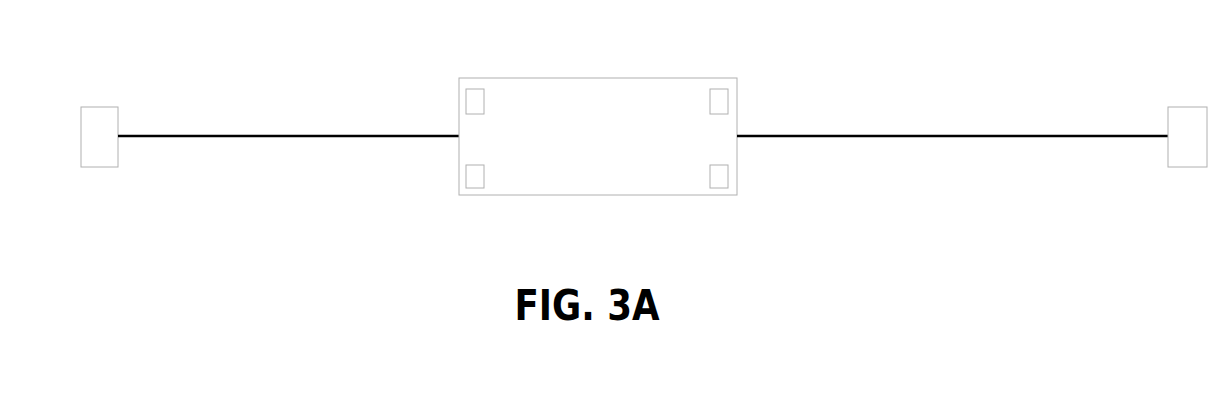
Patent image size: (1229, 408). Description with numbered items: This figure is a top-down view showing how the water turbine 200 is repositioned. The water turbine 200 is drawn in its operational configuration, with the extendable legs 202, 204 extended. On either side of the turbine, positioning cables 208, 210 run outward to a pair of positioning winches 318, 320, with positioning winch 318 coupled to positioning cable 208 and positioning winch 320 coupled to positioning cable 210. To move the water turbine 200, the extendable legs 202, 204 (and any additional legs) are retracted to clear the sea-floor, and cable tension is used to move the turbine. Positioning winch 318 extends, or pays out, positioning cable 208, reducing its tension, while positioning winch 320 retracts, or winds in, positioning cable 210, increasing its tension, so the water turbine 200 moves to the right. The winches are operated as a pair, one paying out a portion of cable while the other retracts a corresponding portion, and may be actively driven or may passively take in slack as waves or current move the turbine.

The water turbine 200 is at (588, 80).
The extendable leg 202 is at (472, 98).
The extendable leg 204 is at (725, 98).
The positioning cable 208 is at (302, 133).
The positioning cable 210 is at (1052, 133).
The positioning winch 318 is at (98, 114).
The positioning winch 320 is at (1185, 115).